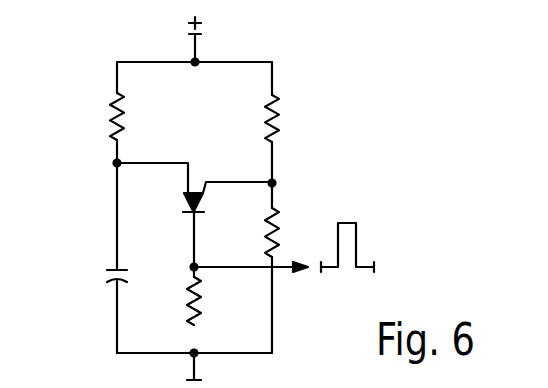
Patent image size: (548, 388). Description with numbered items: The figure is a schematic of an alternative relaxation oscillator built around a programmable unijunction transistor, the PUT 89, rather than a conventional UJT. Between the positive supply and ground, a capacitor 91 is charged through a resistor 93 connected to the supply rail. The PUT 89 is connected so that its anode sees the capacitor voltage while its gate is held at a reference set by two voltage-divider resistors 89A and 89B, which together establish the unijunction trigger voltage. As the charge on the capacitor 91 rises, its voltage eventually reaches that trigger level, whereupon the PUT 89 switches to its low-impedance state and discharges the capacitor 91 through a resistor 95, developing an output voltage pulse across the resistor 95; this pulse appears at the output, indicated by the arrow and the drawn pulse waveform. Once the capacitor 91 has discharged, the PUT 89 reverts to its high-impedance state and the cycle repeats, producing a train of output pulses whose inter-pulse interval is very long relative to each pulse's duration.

The programmable UJT (PUT) device 89 is at (194, 192).
The voltage-divider resistor 89A is at (281, 128).
The voltage-divider resistor 89B is at (281, 230).
The capacitor 91 is at (112, 268).
The resistor 93 is at (110, 124).
The resistor 95 is at (203, 316).